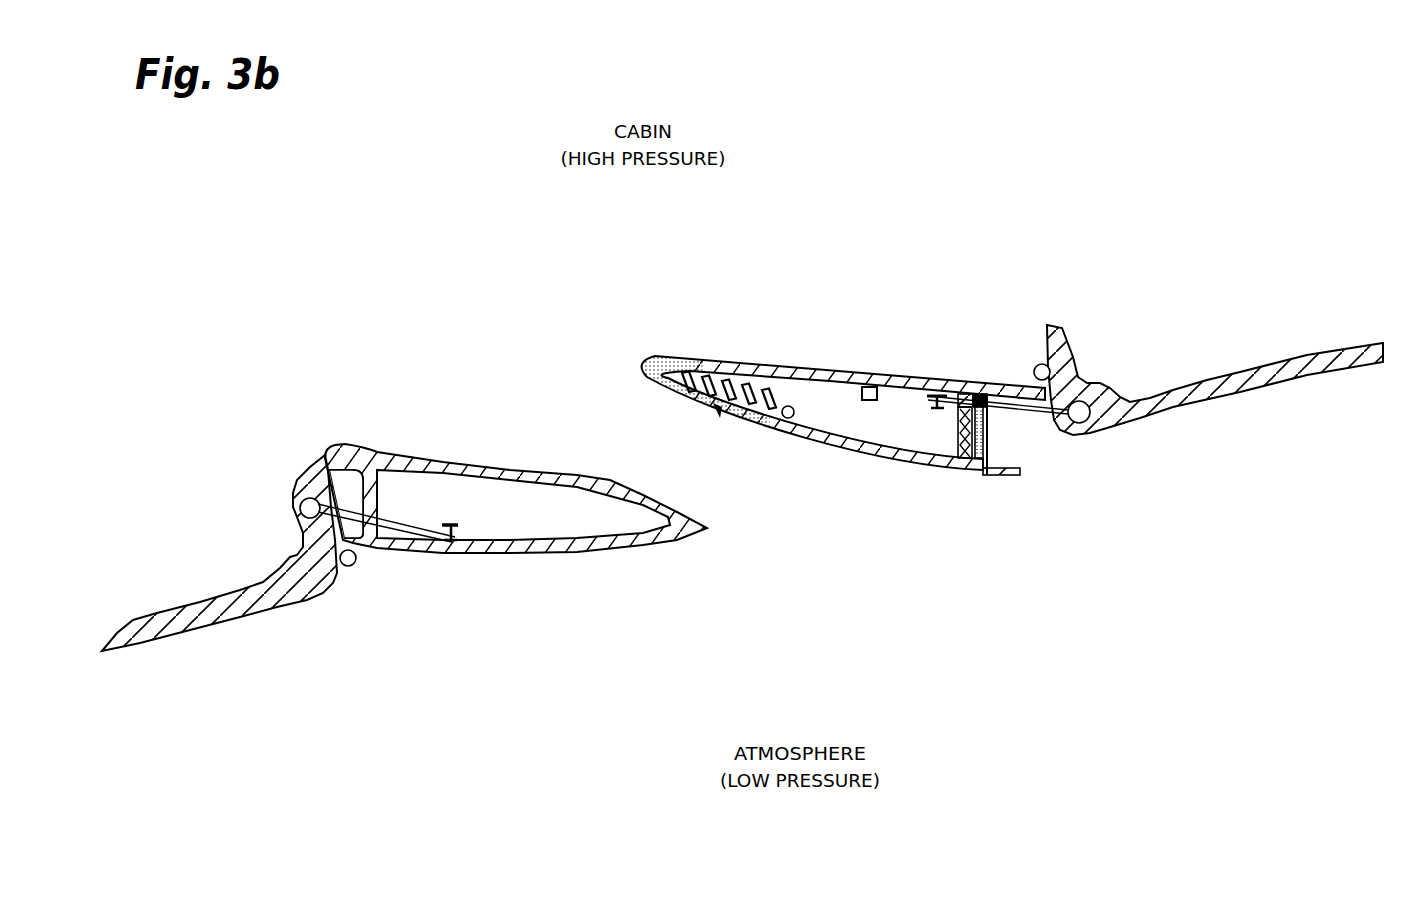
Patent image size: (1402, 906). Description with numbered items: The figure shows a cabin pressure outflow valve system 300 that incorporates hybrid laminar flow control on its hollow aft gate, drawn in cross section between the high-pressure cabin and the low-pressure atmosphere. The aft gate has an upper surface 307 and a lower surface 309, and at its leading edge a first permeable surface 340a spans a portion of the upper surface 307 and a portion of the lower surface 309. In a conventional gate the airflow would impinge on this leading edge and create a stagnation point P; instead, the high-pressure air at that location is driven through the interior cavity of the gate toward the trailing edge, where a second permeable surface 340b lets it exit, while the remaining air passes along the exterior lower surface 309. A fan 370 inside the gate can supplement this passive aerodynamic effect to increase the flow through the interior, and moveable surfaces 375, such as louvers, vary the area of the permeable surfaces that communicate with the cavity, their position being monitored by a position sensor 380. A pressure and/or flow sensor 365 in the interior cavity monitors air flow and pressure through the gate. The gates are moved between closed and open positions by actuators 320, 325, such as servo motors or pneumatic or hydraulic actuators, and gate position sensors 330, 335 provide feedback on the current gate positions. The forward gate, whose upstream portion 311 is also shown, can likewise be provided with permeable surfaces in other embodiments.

The system 300 is at (390, 248).
The upper surface 307 is at (720, 362).
The lower surface 309 is at (740, 422).
The upstream portion 311 is at (700, 507).
The actuator 320 is at (298, 509).
The actuator 325 is at (1087, 390).
The gate position sensor 330 is at (358, 558).
The gate position sensor 335 is at (1038, 366).
The first permeable surface 340a is at (605, 360).
The second permeable surface 340b is at (1022, 438).
The pressure and/or flow sensor 365 is at (870, 386).
The fan 370 is at (957, 434).
The moveable surfaces 375 is at (712, 418).
The position sensor 380 is at (788, 420).
The stagnation point P is at (647, 363).